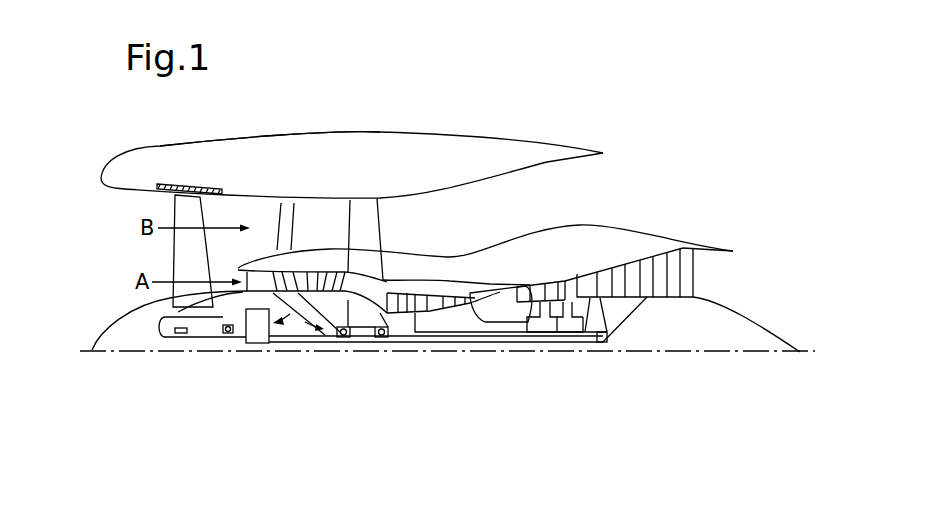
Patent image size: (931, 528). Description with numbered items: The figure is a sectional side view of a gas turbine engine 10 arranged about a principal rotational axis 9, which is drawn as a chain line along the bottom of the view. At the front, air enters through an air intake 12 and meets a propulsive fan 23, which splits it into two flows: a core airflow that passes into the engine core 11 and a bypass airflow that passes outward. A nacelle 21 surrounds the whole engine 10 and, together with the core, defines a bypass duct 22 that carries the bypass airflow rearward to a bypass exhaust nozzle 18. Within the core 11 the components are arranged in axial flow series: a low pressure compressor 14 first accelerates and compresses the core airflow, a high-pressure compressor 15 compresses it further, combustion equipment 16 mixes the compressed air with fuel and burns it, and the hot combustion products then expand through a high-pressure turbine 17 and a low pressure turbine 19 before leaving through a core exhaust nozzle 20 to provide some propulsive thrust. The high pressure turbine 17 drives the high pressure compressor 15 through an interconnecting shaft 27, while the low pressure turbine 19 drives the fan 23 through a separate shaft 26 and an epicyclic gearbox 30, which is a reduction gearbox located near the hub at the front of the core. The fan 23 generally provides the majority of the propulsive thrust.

The principal rotational axis 9 is at (652, 353).
The gas turbine engine 10 is at (160, 148).
The core 11 is at (482, 258).
The air intake 12 is at (113, 219).
The low pressure compressor 14 is at (315, 272).
The high-pressure compressor 15 is at (430, 283).
The combustion equipment 16 is at (494, 303).
The high-pressure turbine 17 is at (548, 288).
The bypass exhaust nozzle 18 is at (660, 188).
The low pressure turbine 19 is at (658, 262).
The core exhaust nozzle 20 is at (713, 281).
The nacelle 21 is at (371, 149).
The bypass duct 22 is at (584, 199).
The propulsive fan 23 is at (175, 256).
The shaft 26 is at (430, 345).
The interconnecting shaft 27 is at (462, 330).
The epicyclic gearbox 30 is at (258, 340).